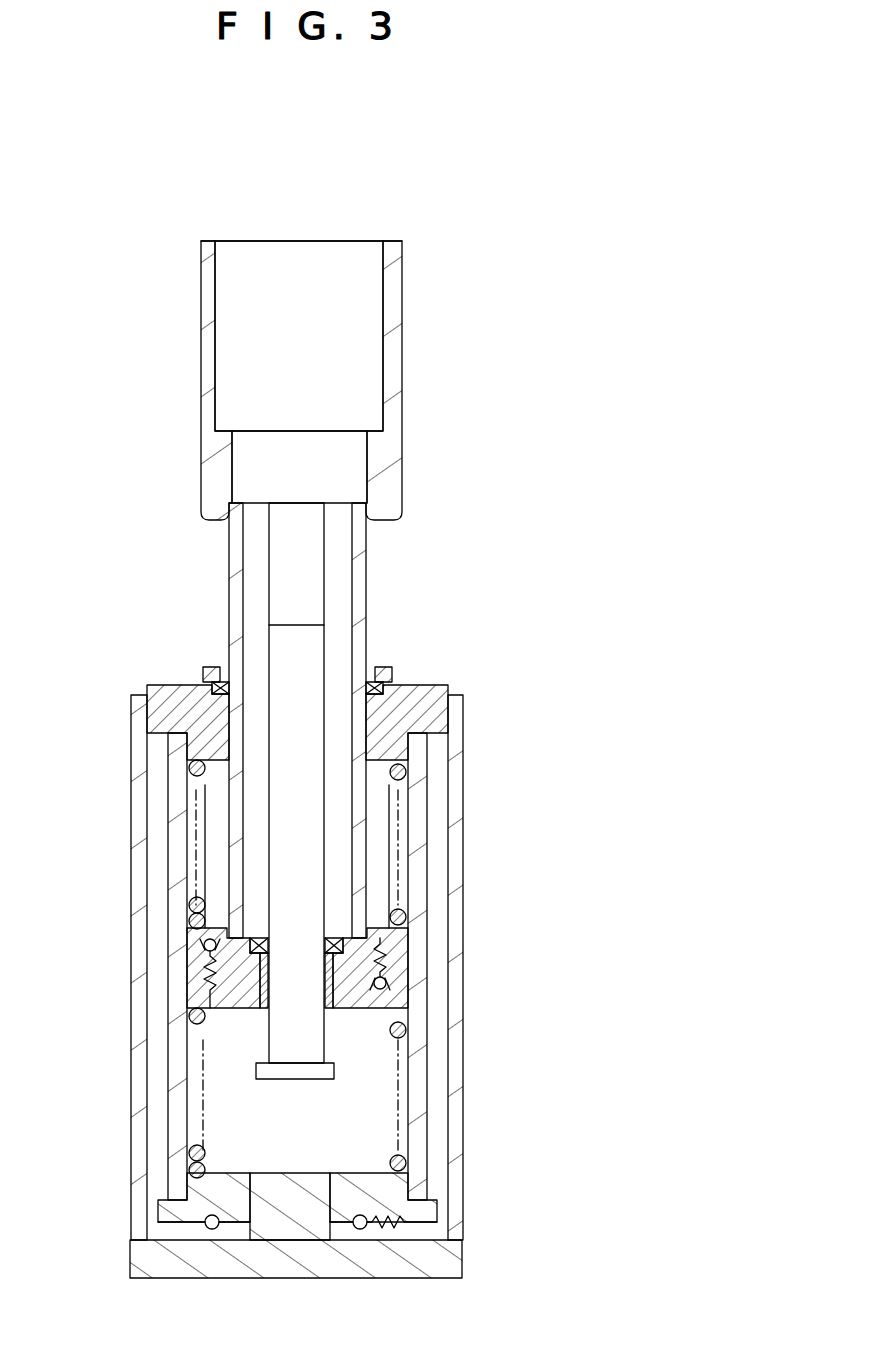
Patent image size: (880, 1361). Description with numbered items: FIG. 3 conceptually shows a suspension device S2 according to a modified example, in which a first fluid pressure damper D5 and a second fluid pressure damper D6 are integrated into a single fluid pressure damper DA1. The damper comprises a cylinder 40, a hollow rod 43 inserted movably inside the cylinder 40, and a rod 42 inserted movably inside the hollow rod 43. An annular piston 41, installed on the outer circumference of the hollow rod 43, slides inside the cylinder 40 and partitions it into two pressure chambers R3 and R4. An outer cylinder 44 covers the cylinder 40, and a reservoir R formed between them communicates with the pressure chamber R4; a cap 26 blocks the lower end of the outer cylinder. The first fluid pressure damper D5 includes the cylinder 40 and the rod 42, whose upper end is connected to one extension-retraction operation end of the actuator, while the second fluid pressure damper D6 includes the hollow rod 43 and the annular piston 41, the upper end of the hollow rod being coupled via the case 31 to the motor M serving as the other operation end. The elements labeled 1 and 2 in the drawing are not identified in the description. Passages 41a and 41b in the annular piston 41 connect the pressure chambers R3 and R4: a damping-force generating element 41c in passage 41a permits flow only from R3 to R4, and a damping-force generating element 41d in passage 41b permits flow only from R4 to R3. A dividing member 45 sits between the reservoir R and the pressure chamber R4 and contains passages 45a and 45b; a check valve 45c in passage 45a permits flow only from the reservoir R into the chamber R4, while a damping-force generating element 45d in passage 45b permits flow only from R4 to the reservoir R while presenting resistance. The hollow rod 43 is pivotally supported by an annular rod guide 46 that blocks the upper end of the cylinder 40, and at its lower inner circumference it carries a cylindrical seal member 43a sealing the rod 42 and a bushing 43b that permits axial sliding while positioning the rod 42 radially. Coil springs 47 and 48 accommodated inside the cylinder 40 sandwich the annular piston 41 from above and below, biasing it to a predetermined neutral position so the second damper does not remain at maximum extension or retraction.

The motor M is at (340, 280).
The suspension device S2 is at (455, 323).
The case 31 is at (395, 410).
The transmission chamber 2 is at (332, 478).
The rod 1 is at (305, 562).
The first fluid pressure damper D5 is at (260, 632).
The hollow rod 43 is at (228, 644).
The rod 42 is at (305, 652).
The annular rod guide 46 is at (430, 684).
The fluid pressure damper DA1 is at (480, 706).
The coil spring 47 is at (188, 768).
The second fluid pressure damper D6 is at (226, 800).
The pressure chamber R3 is at (375, 812).
The cylindrical seal member 43a is at (250, 932).
The cylinder 40 is at (430, 876).
The damping-force generating element 41c is at (203, 945).
The passage 41b is at (410, 952).
The passage 41a is at (215, 985).
The annular piston 41 is at (414, 960).
The damping-force generating element 41d is at (387, 985).
The reservoir R is at (162, 1030).
The bushing 43b is at (258, 1000).
The outer cylinder 44 is at (455, 1056).
The pressure chamber R4 is at (360, 1085).
The coil spring 48 is at (186, 1152).
The passage 45a is at (250, 1200).
The passage 45b is at (333, 1200).
The dividing member 45 is at (190, 1185).
The cap 26 is at (462, 1268).
The check valve 45c is at (212, 1230).
The damping-force generating element 45d is at (360, 1230).